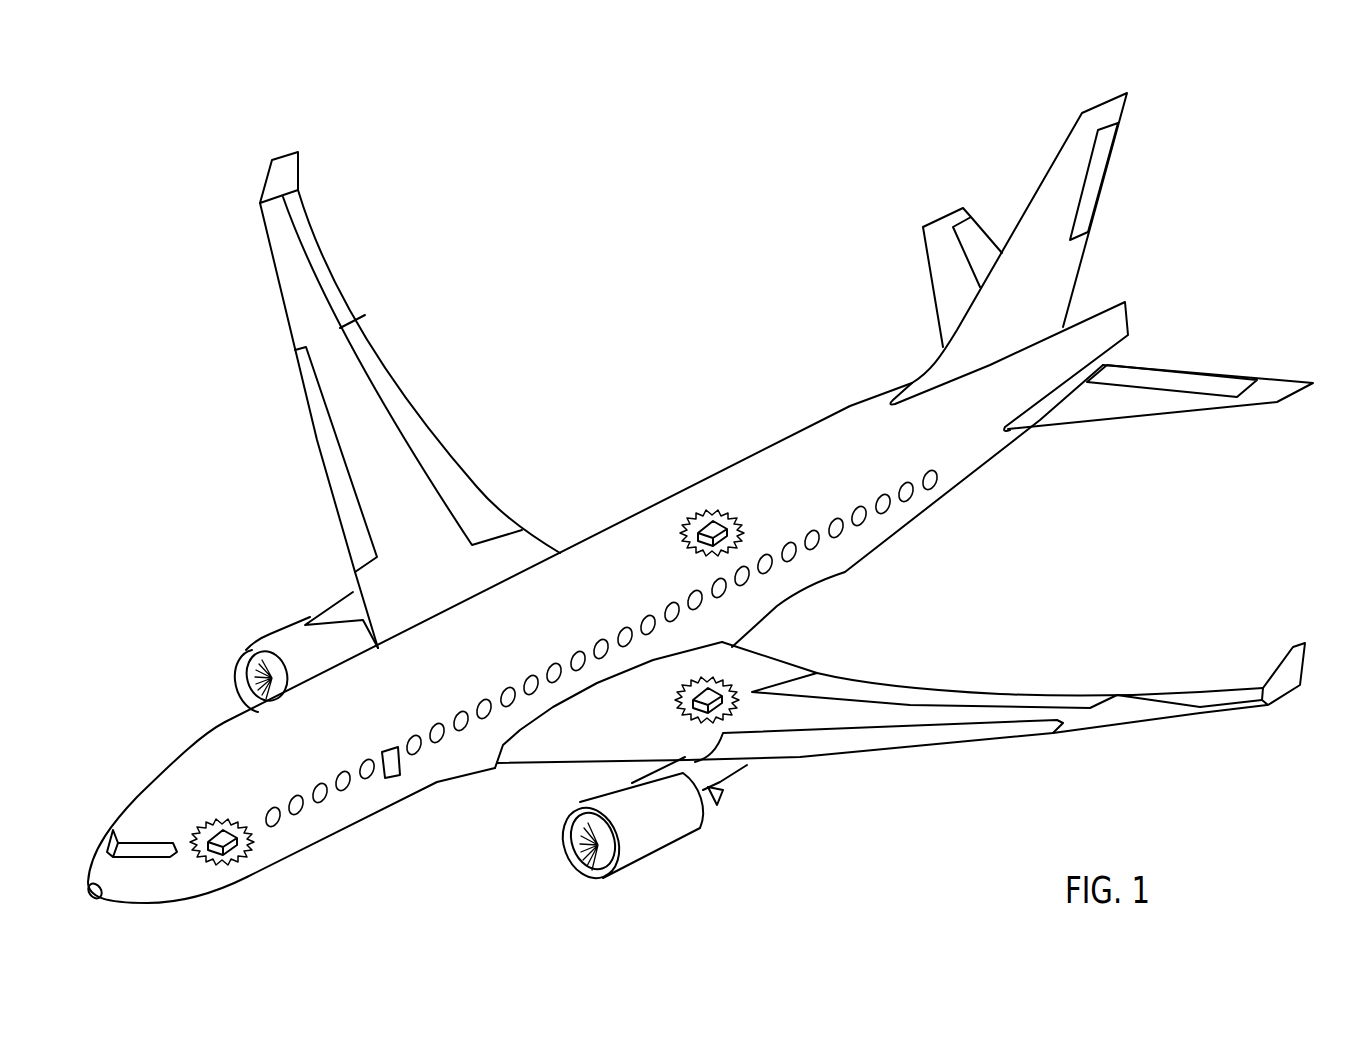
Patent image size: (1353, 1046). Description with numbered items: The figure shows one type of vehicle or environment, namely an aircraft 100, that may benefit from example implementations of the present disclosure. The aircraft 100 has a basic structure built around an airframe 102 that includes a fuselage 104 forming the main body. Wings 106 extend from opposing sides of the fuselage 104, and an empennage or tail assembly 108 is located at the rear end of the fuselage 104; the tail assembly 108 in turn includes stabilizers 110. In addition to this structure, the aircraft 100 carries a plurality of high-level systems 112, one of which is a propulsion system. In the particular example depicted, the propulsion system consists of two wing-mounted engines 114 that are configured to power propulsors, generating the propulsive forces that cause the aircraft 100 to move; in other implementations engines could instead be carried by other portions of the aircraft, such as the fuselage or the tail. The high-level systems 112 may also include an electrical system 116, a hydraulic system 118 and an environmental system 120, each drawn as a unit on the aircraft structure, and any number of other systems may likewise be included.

The aircraft 100 is at (589, 334).
The airframe 102 is at (217, 714).
The fuselage 104 is at (311, 847).
The wings 106 is at (282, 306).
The empennage or tail assembly 108 is at (836, 222).
The stabilizers 110 is at (1050, 166).
The high-level systems 112 is at (979, 616).
The wing-mounted engines 114 is at (278, 626).
The electrical system 116 is at (208, 836).
The hydraulic system 118 is at (723, 690).
The environmental system 120 is at (703, 522).